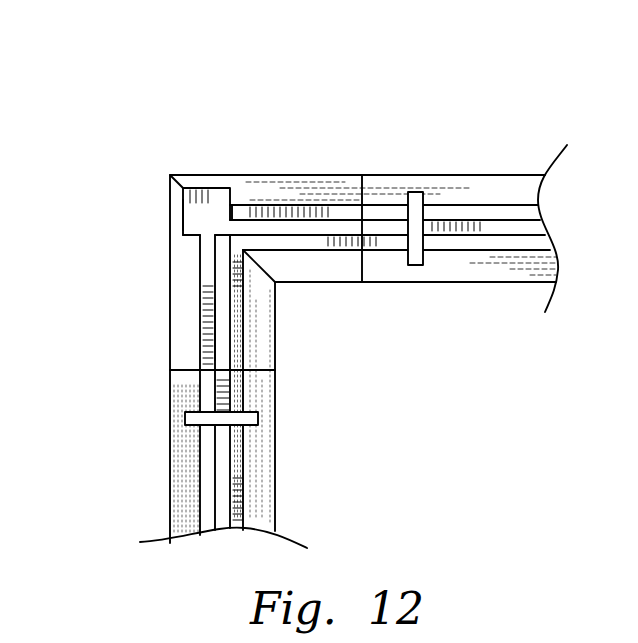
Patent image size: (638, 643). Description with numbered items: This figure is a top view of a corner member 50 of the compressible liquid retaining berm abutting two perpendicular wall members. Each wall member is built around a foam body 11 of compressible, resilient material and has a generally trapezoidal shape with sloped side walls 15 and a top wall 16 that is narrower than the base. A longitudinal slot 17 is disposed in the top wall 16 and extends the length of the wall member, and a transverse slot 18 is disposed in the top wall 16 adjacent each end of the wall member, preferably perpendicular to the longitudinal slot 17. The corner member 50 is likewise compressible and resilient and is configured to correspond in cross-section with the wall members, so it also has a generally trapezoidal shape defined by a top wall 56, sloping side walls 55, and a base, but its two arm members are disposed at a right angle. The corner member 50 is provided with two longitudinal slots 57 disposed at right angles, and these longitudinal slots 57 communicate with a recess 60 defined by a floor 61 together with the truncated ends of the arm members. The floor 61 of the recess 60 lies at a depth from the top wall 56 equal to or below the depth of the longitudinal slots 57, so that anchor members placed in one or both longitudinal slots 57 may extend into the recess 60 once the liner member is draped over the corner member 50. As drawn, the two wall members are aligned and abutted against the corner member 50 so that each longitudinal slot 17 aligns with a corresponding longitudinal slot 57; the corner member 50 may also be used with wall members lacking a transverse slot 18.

The foam body 11 is at (525, 283).
The sloped side walls 15 is at (492, 190).
The top wall 16 is at (517, 203).
The longitudinal slot 17 is at (493, 225).
The transverse slot 18 is at (413, 192).
The corner member 50 is at (301, 157).
The sloping side walls 55 is at (352, 192).
The top wall 56 is at (277, 207).
The longitudinal slots 57 is at (223, 307).
The recess 60 is at (213, 188).
The floor 61 is at (200, 222).